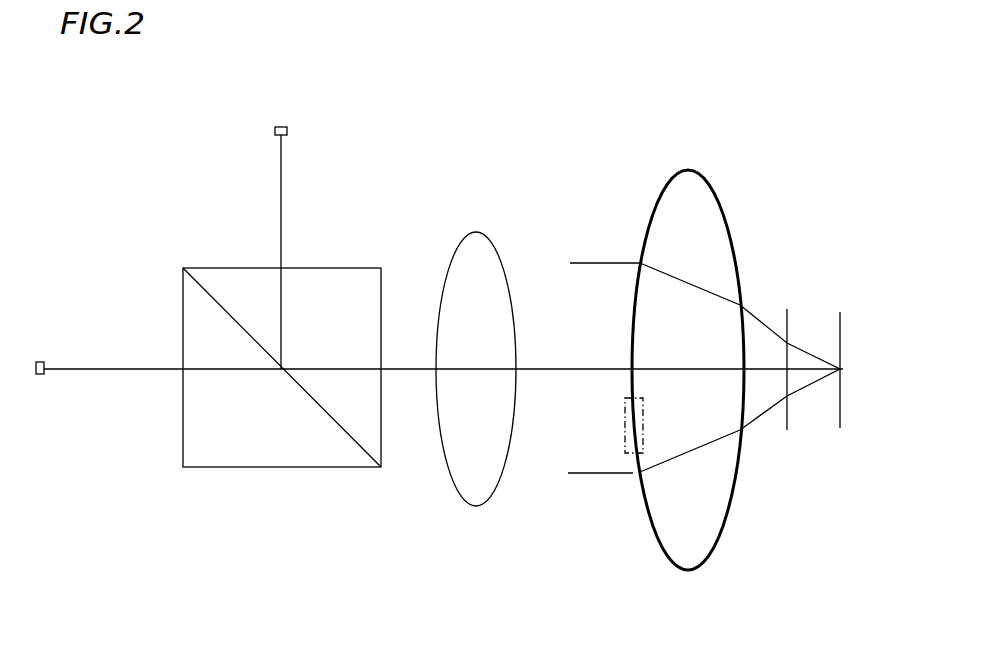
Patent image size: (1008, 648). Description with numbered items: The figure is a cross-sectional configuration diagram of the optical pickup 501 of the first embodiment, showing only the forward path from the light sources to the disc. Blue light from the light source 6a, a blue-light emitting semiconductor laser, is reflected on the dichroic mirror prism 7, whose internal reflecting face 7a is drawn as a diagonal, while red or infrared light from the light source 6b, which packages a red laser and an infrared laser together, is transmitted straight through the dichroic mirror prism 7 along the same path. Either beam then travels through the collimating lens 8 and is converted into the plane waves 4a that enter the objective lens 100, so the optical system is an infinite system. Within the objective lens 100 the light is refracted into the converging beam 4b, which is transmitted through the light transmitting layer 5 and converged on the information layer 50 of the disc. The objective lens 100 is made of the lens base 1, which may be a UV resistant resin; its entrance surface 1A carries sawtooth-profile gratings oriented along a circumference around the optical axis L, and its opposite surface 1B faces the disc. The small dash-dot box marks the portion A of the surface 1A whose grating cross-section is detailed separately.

The optical pickup 501 is at (138, 165).
The light source 6a is at (287, 131).
The light source 6b is at (40, 360).
The dichroic mirror prism 7 is at (282, 378).
The beam splitting surface 7a is at (353, 440).
The collimating lens 8 is at (474, 248).
The objective lens 100 is at (709, 334).
The lens base 1 is at (696, 370).
The surface 1A is at (648, 228).
The second lens surface 1B is at (735, 255).
The plane waves 4a is at (604, 353).
The converged light beam 4b is at (740, 362).
The portion A is at (625, 453).
The optical axis L is at (443, 357).
The light transmitting layer 5 is at (837, 357).
The information layer 50 is at (845, 411).